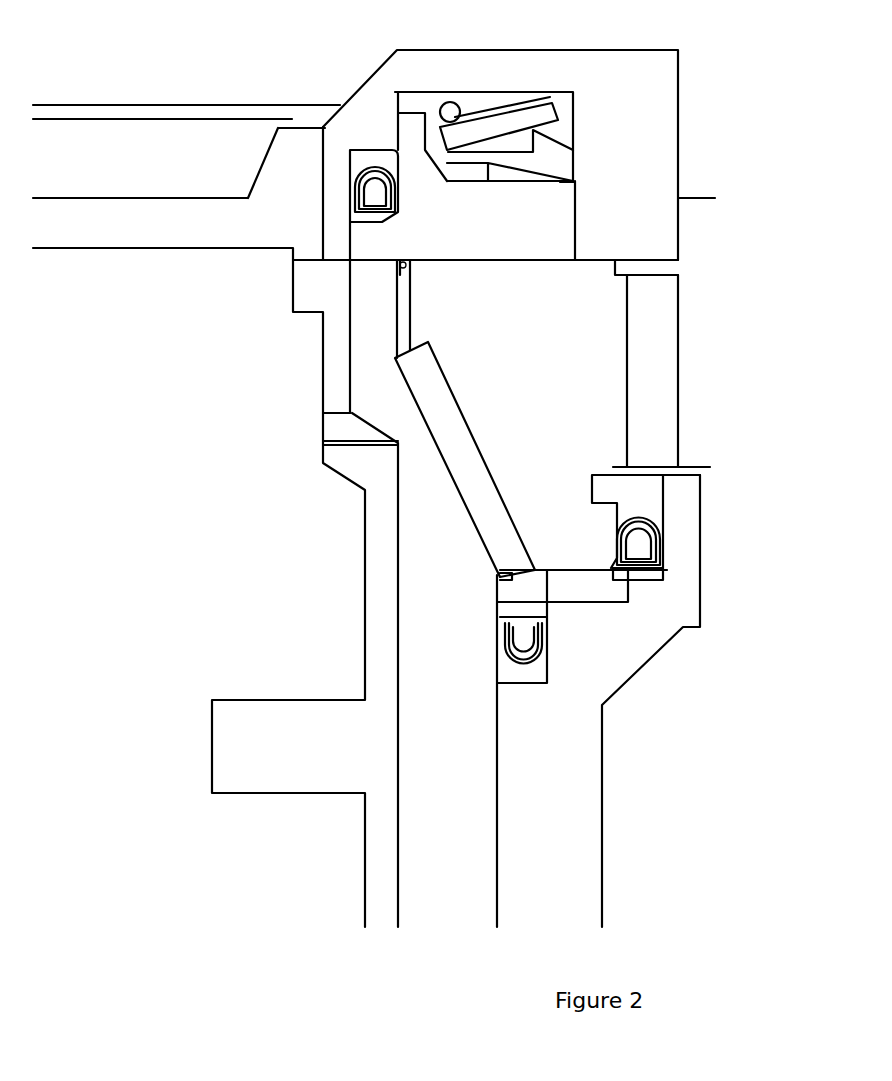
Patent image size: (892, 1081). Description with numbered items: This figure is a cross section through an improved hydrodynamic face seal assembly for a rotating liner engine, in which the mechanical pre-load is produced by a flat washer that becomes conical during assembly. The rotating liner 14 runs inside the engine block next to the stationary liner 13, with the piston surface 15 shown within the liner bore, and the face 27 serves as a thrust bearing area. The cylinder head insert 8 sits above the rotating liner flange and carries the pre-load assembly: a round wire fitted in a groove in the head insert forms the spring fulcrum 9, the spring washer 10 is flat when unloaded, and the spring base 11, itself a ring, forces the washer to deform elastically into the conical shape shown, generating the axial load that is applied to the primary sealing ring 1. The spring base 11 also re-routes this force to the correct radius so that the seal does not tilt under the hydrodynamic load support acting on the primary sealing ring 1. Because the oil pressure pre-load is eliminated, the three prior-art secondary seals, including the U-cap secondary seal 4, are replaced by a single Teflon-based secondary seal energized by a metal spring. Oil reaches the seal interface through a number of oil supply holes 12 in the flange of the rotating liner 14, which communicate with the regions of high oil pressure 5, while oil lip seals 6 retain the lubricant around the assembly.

The primary sealing ring 1 is at (500, 245).
The U-cap secondary seal 4 is at (368, 160).
The regions of high oil pressure 5 is at (530, 647).
The oil lip seals 6 is at (647, 533).
The cylinder head insert 8 is at (532, 75).
The spring fulcrum 9 is at (452, 108).
The spring washer 10 is at (567, 93).
The spring base 11 is at (540, 162).
The oil supply hole 12 is at (468, 455).
The stationary liner 13 is at (565, 770).
The rotating liner 14 is at (435, 510).
The piston surface 15 is at (323, 360).
The face thrust bearing area 27 is at (587, 263).